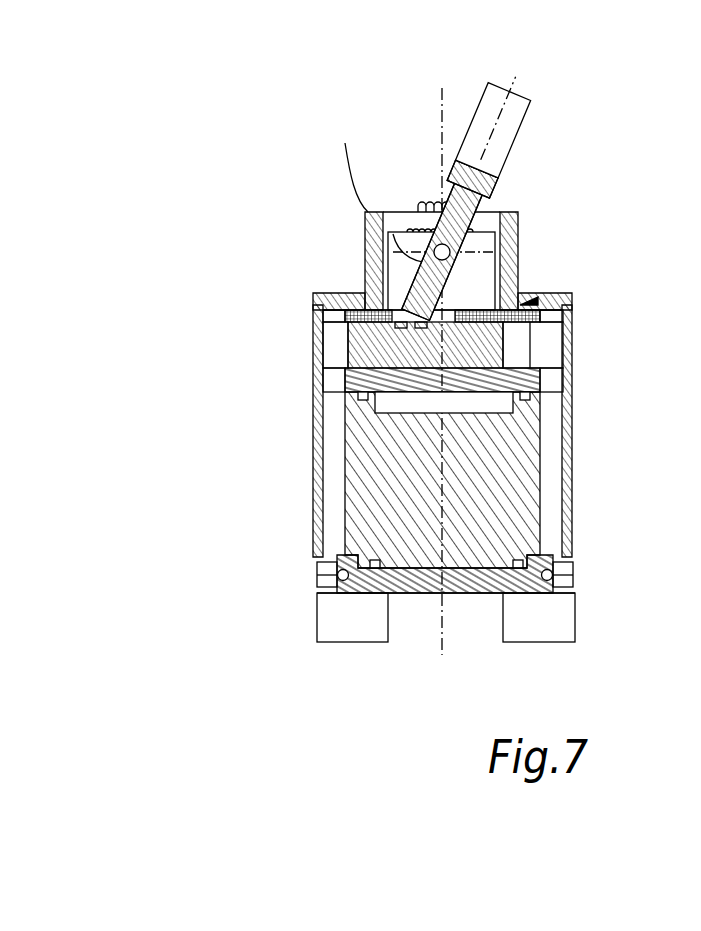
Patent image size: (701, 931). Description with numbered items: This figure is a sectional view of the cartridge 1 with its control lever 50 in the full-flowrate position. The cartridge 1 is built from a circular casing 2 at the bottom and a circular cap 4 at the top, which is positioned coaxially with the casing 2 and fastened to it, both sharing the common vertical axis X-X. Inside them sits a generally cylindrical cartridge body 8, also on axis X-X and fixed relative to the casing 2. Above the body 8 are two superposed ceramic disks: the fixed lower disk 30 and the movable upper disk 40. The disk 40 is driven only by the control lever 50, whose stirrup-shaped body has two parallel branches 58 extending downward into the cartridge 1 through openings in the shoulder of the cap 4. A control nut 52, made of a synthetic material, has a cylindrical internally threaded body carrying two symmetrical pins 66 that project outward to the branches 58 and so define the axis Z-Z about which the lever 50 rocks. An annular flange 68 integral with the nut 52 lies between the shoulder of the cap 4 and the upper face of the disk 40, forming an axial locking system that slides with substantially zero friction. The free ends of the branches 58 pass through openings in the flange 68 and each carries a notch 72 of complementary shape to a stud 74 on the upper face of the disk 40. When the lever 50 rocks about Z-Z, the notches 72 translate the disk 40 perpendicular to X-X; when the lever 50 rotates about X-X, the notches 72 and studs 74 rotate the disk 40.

The cartridge 1 is at (400, 359).
The circular casing 2 is at (462, 592).
The circular cap 4 is at (312, 453).
The cartridge body 8 is at (527, 485).
The lower disk 30 is at (545, 383).
The upper disk 40 is at (517, 350).
The control lever 50 is at (552, 90).
The control nut 52 is at (552, 296).
The branches 58 is at (368, 247).
The pins 66 is at (420, 204).
The annular flange 68 is at (528, 300).
The notch 72 is at (382, 305).
The stud 74 is at (345, 330).